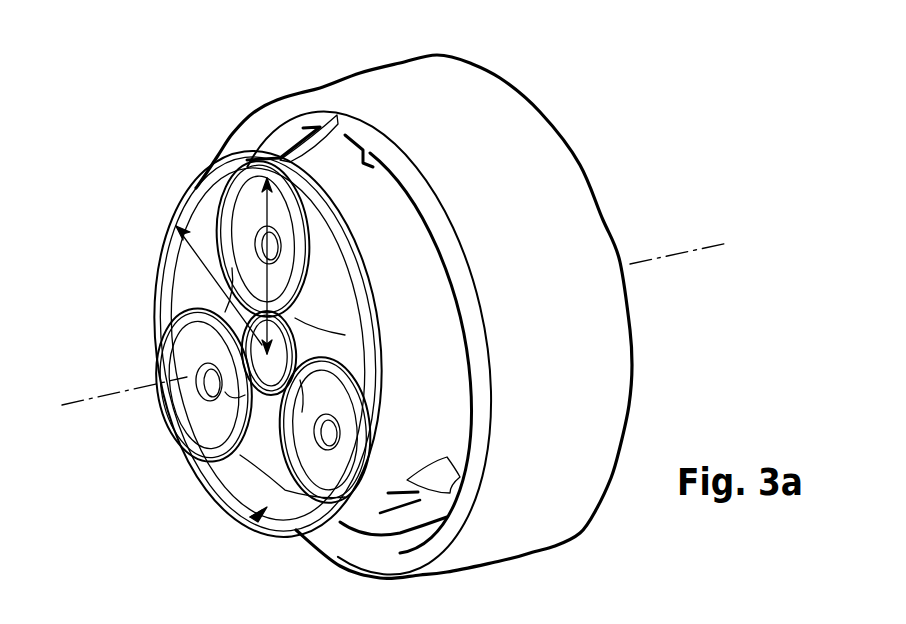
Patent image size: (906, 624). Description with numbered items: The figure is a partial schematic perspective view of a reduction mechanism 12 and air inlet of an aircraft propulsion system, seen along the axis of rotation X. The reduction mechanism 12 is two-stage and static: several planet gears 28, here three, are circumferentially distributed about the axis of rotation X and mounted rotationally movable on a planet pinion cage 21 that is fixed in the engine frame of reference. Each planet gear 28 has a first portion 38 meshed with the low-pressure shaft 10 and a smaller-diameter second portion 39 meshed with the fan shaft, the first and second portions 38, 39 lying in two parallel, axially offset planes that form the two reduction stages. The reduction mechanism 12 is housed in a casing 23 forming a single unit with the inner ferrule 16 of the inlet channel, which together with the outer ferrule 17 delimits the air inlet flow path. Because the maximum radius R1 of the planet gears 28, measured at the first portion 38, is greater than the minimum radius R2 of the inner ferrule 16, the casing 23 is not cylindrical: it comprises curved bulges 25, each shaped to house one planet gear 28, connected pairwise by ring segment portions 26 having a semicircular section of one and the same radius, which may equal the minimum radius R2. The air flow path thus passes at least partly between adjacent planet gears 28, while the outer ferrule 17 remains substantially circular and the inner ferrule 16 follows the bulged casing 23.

The low-pressure shaft 10 is at (232, 500).
The reduction mechanism 12 is at (250, 517).
The inner ferrule 16 is at (455, 440).
The outer ferrule 17 is at (378, 87).
The planet pinion cage 21 is at (193, 293).
The casing 23 is at (283, 530).
The bulges 25 is at (296, 170).
The ring segment portions 26 is at (390, 372).
The planet gears 28 is at (222, 205).
The first portion 38 is at (188, 442).
The second portion 39 is at (245, 403).
The maximum radius of the planet gears R1 is at (271, 206).
The minimum radius of the inner ferrule R2 is at (190, 250).
The axis of rotation X is at (719, 238).